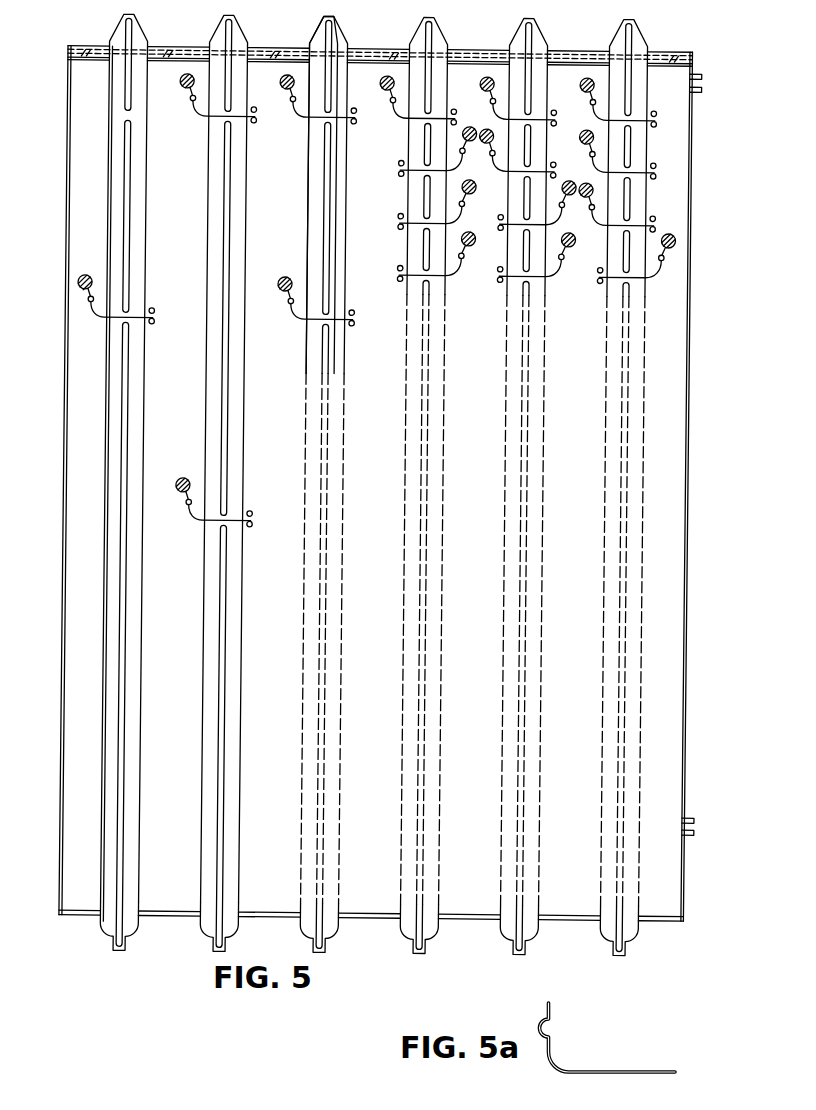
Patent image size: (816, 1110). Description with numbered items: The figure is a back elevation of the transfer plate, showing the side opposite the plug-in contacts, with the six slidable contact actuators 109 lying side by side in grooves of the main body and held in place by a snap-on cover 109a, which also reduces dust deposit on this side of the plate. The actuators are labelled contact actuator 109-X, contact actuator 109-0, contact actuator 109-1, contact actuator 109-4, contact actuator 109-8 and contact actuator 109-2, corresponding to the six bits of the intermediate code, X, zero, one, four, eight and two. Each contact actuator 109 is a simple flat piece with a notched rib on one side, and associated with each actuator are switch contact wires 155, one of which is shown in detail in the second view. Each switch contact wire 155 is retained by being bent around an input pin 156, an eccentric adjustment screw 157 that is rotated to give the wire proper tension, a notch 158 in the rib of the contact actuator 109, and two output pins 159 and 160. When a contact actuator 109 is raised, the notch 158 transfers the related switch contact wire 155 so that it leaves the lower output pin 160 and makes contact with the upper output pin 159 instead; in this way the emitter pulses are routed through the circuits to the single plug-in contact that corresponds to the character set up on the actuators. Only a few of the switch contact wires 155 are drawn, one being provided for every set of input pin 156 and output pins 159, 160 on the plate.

In FIG. 5, the contact actuator 109 is at (143, 377).
In FIG. 5, the snap-on cover 109a is at (474, 46).
In FIG. 5, the contact actuator X 109-X is at (135, 947).
In FIG. 5, the contact actuator 0 109-0 is at (235, 947).
In FIG. 5, the contact actuator 1 109-1 is at (335, 947).
In FIG. 5, the contact actuator 4 109-4 is at (435, 947).
In FIG. 5, the contact actuator 8 109-8 is at (535, 947).
In FIG. 5, the contact actuator 2 109-2 is at (635, 947).
In FIG. 5, the switch contact wire 155 is at (101, 315).
In FIG. 5a, the switch contact wire 155 is at (553, 1052).
In FIG. 5, the input pin 156 is at (91, 298).
In FIG. 5, the adjustment screw 157 is at (91, 266).
In FIG. 5, the notch 158 is at (132, 310).
In FIG. 5, the upper output pin 159 is at (158, 308).
In FIG. 5, the lower output pin 160 is at (157, 322).